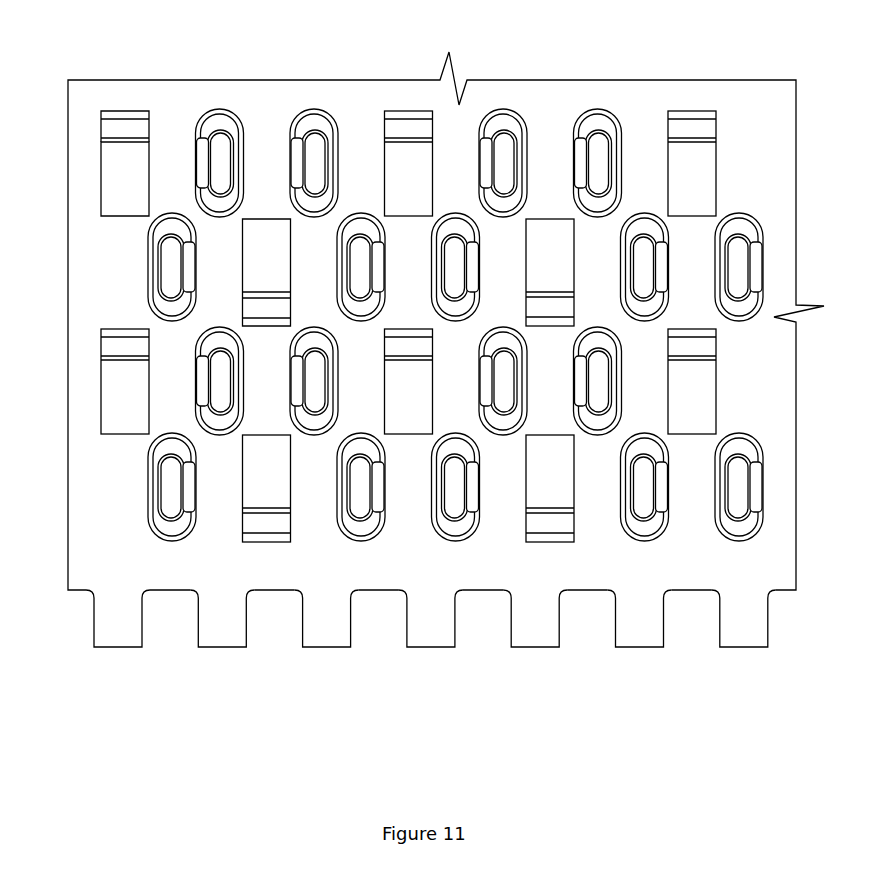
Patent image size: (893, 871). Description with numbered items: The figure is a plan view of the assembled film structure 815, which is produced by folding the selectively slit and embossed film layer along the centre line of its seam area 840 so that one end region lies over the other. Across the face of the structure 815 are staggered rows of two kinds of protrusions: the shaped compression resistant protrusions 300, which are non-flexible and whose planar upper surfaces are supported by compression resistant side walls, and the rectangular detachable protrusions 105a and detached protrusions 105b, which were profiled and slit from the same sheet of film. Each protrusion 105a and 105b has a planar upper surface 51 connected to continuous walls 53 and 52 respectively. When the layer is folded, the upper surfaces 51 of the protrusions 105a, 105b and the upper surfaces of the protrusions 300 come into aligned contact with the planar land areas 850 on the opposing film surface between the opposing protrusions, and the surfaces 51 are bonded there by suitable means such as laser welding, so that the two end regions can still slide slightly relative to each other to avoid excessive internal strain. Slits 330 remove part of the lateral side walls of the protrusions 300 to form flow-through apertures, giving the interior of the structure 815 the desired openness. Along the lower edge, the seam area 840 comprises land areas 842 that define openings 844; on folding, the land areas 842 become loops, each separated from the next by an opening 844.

The detached protrusions 105b is at (155, 190).
The detachable protrusions 105a is at (241, 457).
The shaped compression resistant protrusions 300 is at (302, 106).
The slits 330 is at (579, 155).
The planar land areas 850 is at (453, 133).
The continuous walls 52 is at (120, 128).
The upper surfaces 51 is at (116, 169).
The continuous walls 53 is at (261, 307).
The seam area 840 is at (393, 657).
The land areas 842 is at (425, 648).
The openings 844 is at (592, 622).
The assembled film structure 815 is at (118, 688).